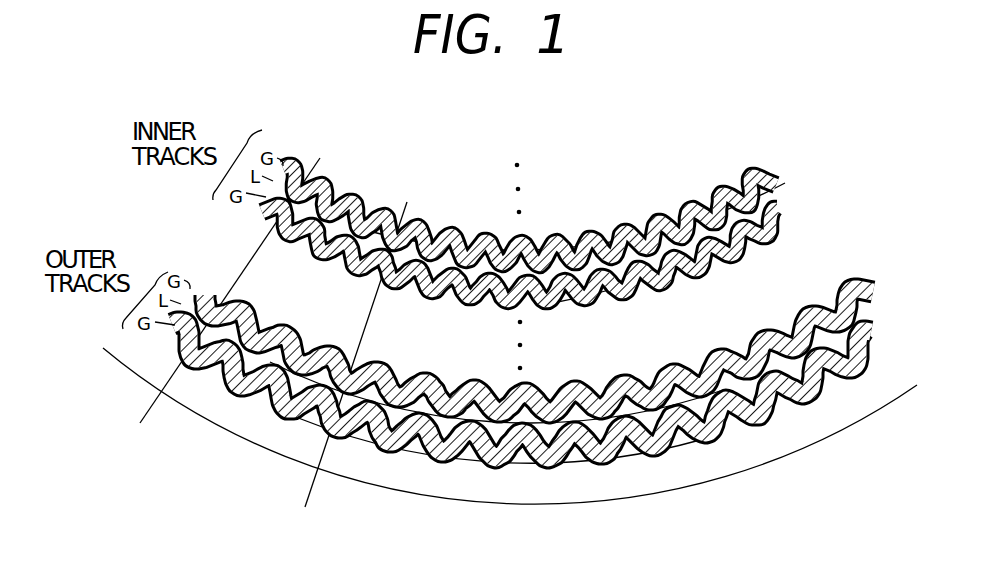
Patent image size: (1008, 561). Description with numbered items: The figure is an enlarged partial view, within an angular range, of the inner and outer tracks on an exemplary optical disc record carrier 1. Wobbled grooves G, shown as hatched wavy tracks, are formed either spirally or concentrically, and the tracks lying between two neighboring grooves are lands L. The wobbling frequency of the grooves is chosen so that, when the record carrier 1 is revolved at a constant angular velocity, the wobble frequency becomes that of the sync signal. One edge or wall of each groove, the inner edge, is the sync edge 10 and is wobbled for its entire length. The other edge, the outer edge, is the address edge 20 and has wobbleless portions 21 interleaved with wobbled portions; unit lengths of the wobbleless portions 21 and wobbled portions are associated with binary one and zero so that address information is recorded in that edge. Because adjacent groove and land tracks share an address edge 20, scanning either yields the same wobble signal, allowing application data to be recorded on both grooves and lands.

The optical disc record carrier 1 is at (668, 106).
The sync edge 10 is at (428, 258).
The address edge 20 is at (760, 244).
The wobbleless portions 21 is at (617, 300).